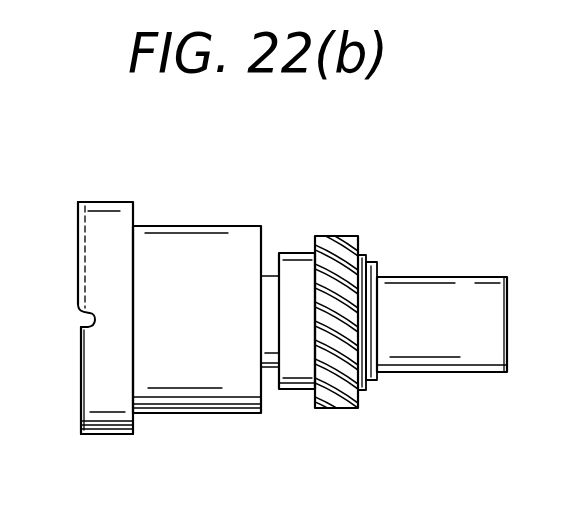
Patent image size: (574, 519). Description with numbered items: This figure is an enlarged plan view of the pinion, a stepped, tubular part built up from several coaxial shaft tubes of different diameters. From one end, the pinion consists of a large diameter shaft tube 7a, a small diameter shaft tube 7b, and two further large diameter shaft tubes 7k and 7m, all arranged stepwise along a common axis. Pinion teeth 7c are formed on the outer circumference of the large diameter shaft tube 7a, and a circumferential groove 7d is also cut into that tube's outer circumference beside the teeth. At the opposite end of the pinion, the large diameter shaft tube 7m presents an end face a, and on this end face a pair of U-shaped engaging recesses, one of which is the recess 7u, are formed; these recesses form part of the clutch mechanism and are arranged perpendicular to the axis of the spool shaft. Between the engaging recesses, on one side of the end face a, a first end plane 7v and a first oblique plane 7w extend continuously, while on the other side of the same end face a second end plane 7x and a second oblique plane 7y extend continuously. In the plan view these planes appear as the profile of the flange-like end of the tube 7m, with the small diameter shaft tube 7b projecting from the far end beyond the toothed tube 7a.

The end face a is at (78, 219).
The large diameter shaft tube 7m is at (118, 201).
The second end plane 7x is at (78, 252).
The second oblique plane 7y is at (76, 268).
The U-shaped engaging recess 7u is at (80, 317).
The first oblique plane 7w is at (80, 368).
The first end plane 7v is at (81, 417).
The large diameter shaft tube 7k is at (196, 225).
The circumferential groove 7d is at (270, 287).
The large diameter shaft tube 7a is at (294, 253).
The pinion teeth 7c is at (341, 236).
The small diameter shaft tube 7b is at (463, 276).